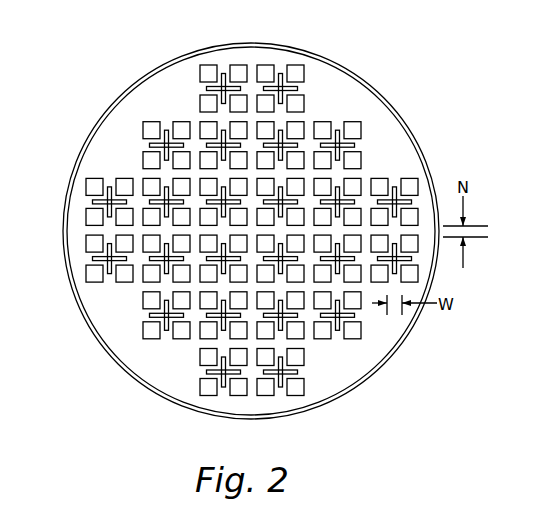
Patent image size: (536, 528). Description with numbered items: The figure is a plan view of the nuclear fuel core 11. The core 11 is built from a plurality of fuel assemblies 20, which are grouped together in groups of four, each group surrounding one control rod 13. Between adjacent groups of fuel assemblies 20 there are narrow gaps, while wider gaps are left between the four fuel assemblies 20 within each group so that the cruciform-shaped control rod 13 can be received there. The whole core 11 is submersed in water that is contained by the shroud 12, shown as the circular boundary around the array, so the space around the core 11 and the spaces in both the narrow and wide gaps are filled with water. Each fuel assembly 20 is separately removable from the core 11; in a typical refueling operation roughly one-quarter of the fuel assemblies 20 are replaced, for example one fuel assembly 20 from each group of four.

The core 11 is at (251, 220).
The shroud 12 is at (393, 102).
The control rod 13 is at (355, 146).
The fuel assembly 20 is at (306, 105).